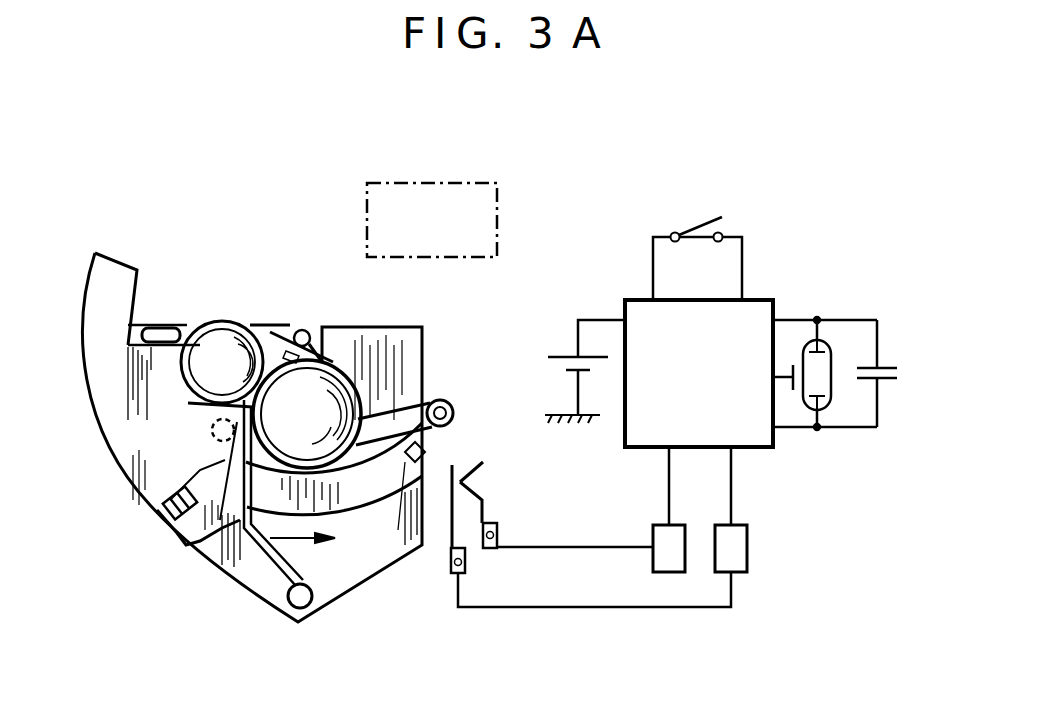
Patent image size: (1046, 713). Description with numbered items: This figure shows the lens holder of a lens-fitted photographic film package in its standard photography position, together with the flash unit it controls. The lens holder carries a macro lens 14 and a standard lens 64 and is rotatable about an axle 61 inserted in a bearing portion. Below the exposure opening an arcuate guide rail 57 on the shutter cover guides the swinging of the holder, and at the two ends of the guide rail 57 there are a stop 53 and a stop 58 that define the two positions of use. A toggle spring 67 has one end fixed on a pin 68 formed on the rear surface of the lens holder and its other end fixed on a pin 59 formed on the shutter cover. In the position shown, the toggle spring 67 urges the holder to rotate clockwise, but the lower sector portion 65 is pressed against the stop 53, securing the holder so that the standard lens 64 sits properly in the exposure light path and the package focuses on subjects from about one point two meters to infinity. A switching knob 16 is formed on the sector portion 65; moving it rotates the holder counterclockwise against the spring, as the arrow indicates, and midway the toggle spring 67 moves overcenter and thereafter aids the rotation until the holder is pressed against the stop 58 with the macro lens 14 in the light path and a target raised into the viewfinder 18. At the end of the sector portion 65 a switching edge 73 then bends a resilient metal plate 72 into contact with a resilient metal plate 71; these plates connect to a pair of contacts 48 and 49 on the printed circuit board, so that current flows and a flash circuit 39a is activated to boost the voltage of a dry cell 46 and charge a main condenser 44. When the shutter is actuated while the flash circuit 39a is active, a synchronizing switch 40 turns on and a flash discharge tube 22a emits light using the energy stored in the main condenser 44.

The macro lens 14 is at (222, 346).
The switching knob 16 is at (152, 510).
The viewfinder 18 is at (425, 183).
The flash discharge tube 22a is at (832, 352).
The flash circuit 39a is at (750, 436).
The synchronizing switch 40 is at (703, 215).
The main condenser 44 is at (895, 385).
The dry cell 46 is at (547, 362).
The contact 48 is at (653, 538).
The contact 49 is at (750, 560).
The stop 53 is at (160, 326).
The arcuate guide rail 57 is at (367, 497).
The stop 58 is at (408, 545).
The pin 59 is at (301, 608).
The axle 61 is at (300, 330).
The standard lens 64 is at (322, 395).
The lower sector portion 65 is at (137, 398).
The toggle spring 67 is at (244, 570).
The pin 68 is at (210, 434).
The resilient metal plate 71 is at (475, 480).
The resilient metal plate 72 is at (468, 462).
The switching edge 73 is at (193, 553).